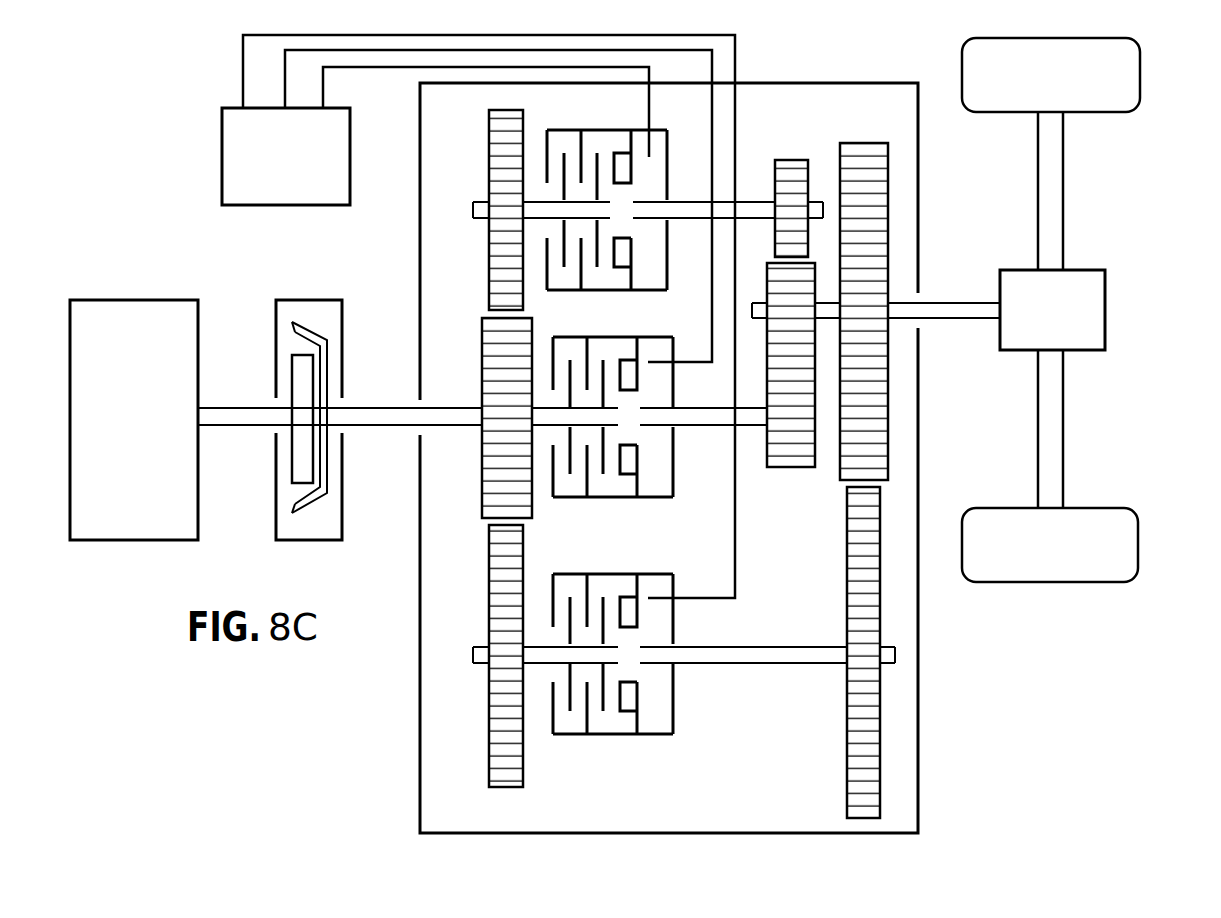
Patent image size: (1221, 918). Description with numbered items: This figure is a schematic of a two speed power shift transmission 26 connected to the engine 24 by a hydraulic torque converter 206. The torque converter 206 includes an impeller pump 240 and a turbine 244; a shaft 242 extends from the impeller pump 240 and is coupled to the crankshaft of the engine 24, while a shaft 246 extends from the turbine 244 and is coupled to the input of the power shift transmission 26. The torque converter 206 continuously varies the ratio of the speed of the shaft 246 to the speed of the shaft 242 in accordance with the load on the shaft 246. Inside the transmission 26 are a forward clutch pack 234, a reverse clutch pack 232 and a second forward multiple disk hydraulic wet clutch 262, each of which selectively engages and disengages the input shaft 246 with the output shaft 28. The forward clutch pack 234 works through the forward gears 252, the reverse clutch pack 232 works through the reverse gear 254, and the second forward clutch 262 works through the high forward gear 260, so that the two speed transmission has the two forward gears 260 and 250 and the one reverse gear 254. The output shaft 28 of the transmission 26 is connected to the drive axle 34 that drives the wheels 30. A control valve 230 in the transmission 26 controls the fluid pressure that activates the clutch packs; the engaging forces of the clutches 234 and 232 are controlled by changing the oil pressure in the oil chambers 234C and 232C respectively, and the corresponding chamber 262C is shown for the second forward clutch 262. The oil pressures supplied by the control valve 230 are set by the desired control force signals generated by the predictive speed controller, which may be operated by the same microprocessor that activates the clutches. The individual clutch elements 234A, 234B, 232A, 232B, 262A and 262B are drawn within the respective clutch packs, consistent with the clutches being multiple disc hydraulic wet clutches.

The engine 24 is at (135, 300).
The power shift transmission 26 is at (418, 648).
The output shaft 28 is at (962, 302).
The wheels 30 is at (1140, 75).
The drive axle 34 is at (1107, 310).
The hydraulic torque converter 206 is at (305, 390).
The control valve 230 is at (222, 160).
The reverse clutch pack 232 is at (508, 295).
The second clutch piston 232A is at (628, 483).
The second clutch plates 232B is at (582, 483).
The oil chamber 232C is at (660, 347).
The forward clutch pack 234 is at (521, 194).
The first clutch piston 234A is at (623, 145).
The first clutch plates 234B is at (573, 145).
The oil chamber 234C is at (658, 138).
The impeller pump 240 is at (282, 378).
The shaft 242 is at (240, 428).
The turbine 244 is at (327, 380).
The shaft 246 is at (382, 430).
The forward gear 250 is at (489, 270).
The forward gears 252 is at (812, 150).
The reverse gear 254 is at (788, 468).
The high forward gear 260 is at (482, 715).
The second forward multiple disk hydraulic wet clutch 262 is at (499, 411).
The third clutch piston 262A is at (630, 720).
The third clutch plates 262B is at (583, 720).
The third clutch control line 262C is at (688, 558).